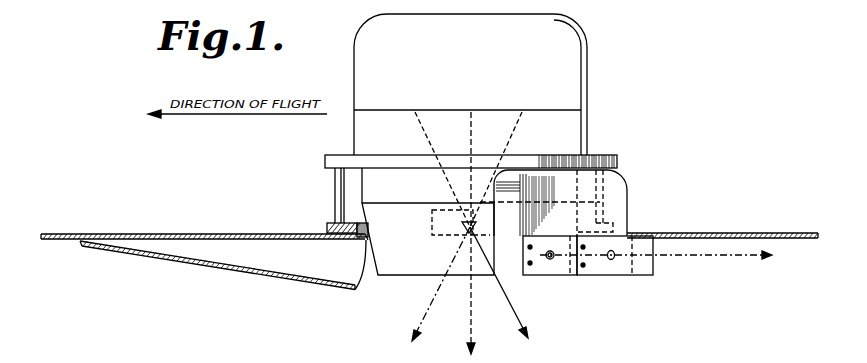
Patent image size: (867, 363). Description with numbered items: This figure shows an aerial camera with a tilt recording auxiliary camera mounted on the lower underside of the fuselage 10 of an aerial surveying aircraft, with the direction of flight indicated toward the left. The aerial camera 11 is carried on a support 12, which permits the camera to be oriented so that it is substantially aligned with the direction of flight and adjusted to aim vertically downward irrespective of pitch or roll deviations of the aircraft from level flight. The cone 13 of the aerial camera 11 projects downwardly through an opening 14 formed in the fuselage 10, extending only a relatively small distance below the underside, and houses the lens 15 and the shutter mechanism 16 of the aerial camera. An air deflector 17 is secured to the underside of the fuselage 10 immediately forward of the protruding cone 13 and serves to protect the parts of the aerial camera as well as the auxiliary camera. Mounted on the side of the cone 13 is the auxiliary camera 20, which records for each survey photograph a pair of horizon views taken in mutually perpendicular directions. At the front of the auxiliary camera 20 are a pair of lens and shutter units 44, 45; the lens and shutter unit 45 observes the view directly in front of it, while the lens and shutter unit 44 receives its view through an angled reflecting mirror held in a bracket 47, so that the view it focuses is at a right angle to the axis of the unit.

The fuselage 10 is at (707, 233).
The aerial camera 11 is at (589, 59).
The support 12 is at (334, 189).
The cone 13 is at (415, 268).
The opening 14 is at (367, 240).
The lens 15 is at (460, 223).
The shutter mechanism 16 is at (461, 240).
The air deflector 17 is at (303, 288).
The auxiliary camera 20 is at (628, 205).
The lens and shutter unit 44 is at (606, 261).
The lens and shutter unit 45 is at (549, 273).
The bracket 47 is at (624, 270).